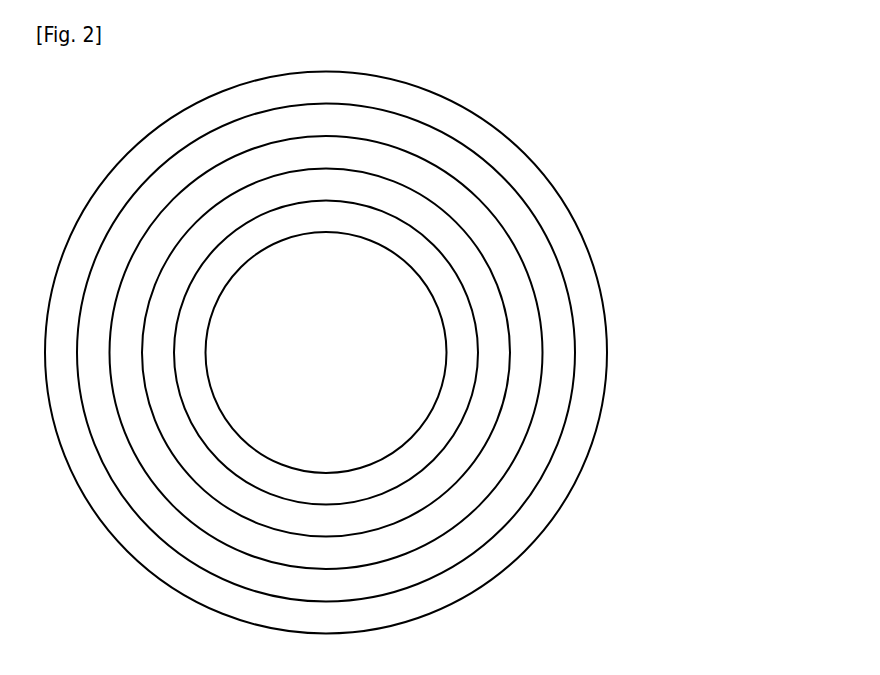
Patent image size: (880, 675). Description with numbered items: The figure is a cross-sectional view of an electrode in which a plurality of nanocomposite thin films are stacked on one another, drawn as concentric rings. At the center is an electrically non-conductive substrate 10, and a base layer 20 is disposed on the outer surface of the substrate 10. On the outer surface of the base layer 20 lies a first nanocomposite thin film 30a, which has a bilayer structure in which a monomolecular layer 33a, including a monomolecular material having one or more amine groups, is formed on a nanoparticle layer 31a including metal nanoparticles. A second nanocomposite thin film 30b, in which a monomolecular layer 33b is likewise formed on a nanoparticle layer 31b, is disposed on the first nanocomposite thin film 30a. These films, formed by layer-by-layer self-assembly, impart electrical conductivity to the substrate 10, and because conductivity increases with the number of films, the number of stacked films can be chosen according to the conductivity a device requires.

The electrically non-conductive substrate 10 is at (425, 358).
The base layer 20 is at (457, 293).
The nanoparticle layer 31a is at (445, 234).
The monomolecular layer 33a is at (452, 197).
The first nanocomposite thin film 30a is at (447, 352).
The nanoparticle layer 31b is at (457, 158).
The monomolecular layer 33b is at (457, 121).
The second nanocomposite thin film 30b is at (414, 353).